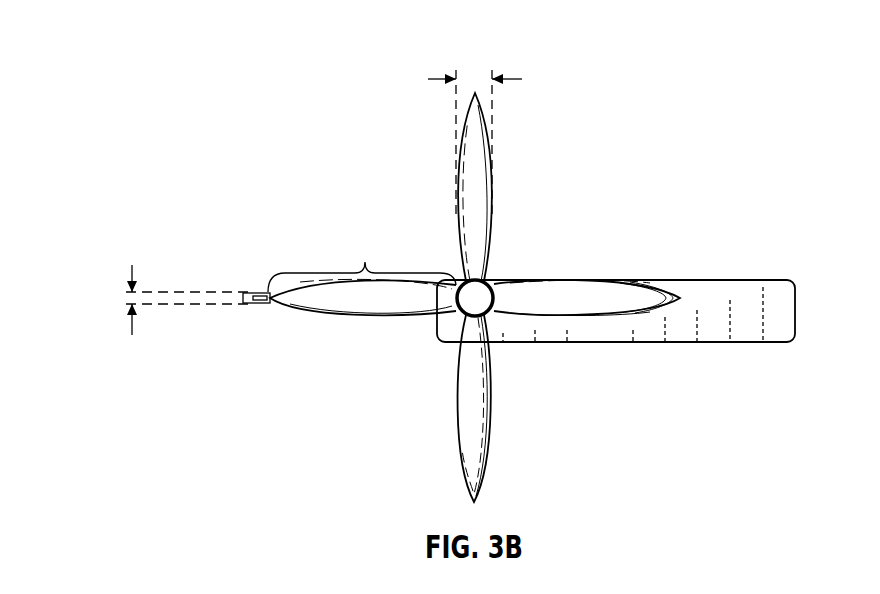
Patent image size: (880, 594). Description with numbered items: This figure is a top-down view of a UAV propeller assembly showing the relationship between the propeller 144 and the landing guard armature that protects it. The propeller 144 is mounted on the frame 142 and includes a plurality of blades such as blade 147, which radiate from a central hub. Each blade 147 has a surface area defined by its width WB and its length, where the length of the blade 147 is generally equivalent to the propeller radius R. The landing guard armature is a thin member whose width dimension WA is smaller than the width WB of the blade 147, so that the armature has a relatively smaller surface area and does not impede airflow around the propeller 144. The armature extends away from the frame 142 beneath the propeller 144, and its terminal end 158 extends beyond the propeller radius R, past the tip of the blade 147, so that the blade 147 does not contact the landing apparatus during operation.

The frame 142 is at (720, 280).
The propeller 144 is at (495, 282).
The blade 147 is at (339, 348).
The terminal end 158 is at (262, 294).
The width dimension WA is at (130, 276).
The width WB is at (510, 79).
The propeller radius R is at (362, 264).